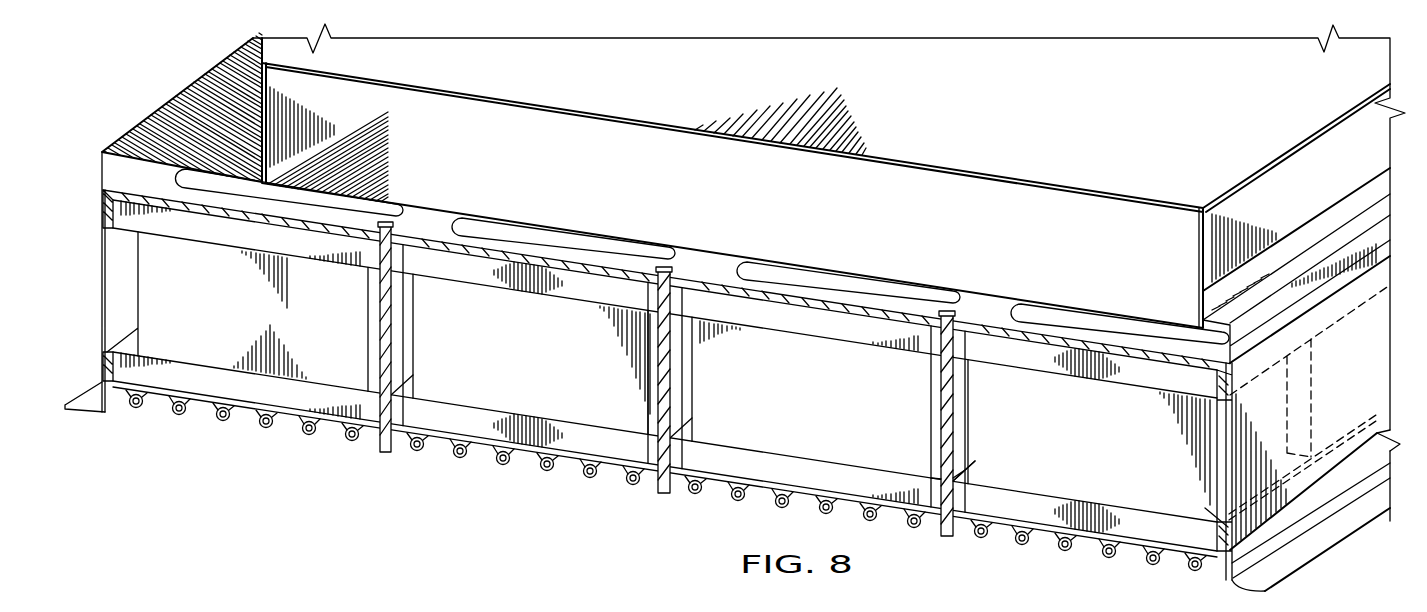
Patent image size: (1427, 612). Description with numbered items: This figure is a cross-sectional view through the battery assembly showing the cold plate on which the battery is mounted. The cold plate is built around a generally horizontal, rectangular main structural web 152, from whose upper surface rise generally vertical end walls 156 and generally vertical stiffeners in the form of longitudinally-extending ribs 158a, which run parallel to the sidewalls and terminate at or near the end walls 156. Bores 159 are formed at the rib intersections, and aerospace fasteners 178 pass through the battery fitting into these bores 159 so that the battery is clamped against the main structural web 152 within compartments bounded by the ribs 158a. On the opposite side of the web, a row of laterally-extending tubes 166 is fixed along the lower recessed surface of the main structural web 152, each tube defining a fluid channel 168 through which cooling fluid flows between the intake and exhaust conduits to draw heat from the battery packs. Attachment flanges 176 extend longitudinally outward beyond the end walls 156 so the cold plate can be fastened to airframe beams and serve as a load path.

The main structural web 152 is at (527, 459).
The end walls 156 is at (127, 325).
The longitudinally-extending ribs 158a is at (473, 420).
The bores 159 is at (949, 475).
The laterally-extending tubes 166 is at (183, 413).
The fluid channel 168 is at (170, 418).
The attachment flanges 176 is at (82, 414).
The aerospace fasteners 178 is at (946, 540).